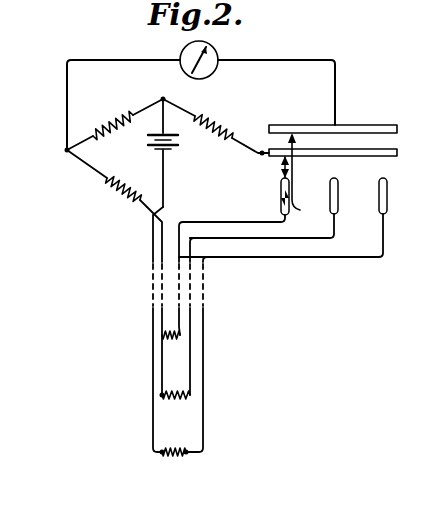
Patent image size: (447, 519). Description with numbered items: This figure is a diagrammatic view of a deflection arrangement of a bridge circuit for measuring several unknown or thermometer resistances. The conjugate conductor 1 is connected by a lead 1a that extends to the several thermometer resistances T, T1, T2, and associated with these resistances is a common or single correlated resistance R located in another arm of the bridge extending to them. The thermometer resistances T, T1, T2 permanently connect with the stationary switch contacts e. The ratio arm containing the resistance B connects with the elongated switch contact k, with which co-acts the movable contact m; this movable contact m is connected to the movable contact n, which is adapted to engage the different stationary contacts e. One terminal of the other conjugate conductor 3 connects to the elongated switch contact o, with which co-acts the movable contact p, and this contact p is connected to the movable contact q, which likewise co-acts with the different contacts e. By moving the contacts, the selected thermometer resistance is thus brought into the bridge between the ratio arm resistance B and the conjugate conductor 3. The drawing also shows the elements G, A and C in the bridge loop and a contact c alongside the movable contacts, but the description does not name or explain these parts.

The conjugate conductor 3 is at (67, 92).
The galvanometer G is at (217, 53).
The bridge resistance A is at (105, 132).
The resistance B is at (216, 126).
The battery C is at (172, 146).
The conjugate conductor 1 is at (162, 124).
The correlated resistance R is at (118, 196).
The lead 1a is at (153, 232).
The elongated switch contact o is at (370, 125).
The elongated switch contact k is at (397, 152).
The movable contact p is at (292, 143).
The movable contact q is at (301, 182).
The movable contact m is at (280, 162).
The movable contact n is at (280, 176).
The movable electrode c is at (281, 196).
The stationary switch contacts e is at (330, 195).
The thermometer resistance T is at (172, 341).
The thermometer resistance T1 is at (174, 401).
The thermometer resistance T2 is at (174, 458).